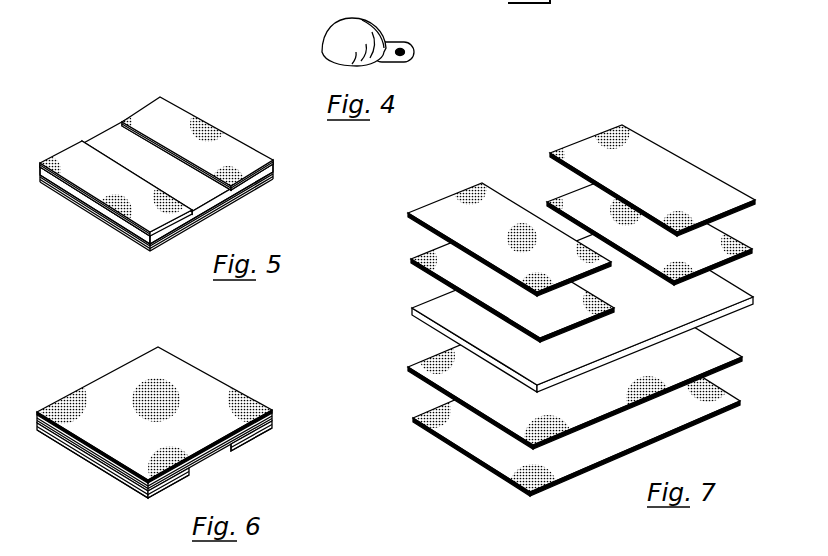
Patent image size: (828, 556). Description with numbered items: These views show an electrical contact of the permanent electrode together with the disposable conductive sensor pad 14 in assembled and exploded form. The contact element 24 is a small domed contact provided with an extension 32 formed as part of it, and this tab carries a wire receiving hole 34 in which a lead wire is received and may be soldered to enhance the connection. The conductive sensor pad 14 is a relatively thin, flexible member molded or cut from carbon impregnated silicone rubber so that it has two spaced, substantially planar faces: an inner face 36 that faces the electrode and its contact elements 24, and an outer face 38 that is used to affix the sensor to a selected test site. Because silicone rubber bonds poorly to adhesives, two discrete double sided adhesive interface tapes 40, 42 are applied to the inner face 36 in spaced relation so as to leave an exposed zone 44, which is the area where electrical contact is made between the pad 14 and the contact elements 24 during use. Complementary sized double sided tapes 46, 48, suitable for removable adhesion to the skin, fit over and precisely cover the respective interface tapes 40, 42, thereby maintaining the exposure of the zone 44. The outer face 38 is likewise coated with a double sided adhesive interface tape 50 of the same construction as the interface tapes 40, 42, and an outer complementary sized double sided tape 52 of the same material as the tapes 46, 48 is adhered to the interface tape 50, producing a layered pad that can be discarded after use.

In FIG. 5, the conductive sensor pad 14 is at (172, 172).
In FIG. 6, the conductive sensor pad 14 is at (185, 436).
In FIG. 4, the contact element 24 is at (333, 40).
In FIG. 4, the extension 32 is at (395, 43).
In FIG. 4, the wire receiving hole 34 is at (410, 60).
In FIG. 5, the inner face 36 is at (117, 135).
In FIG. 6, the inner face 36 is at (205, 463).
In FIG. 7, the inner face 36 is at (730, 283).
In FIG. 5, the outer face 38 is at (257, 188).
In FIG. 6, the outer face 38 is at (222, 450).
In FIG. 7, the outer face 38 is at (735, 310).
In FIG. 5, the double sided adhesive interface tape 40 is at (38, 168).
In FIG. 6, the double sided adhesive interface tape 40 is at (268, 422).
In FIG. 7, the double sided adhesive interface tape 40 is at (428, 252).
In FIG. 5, the double sided adhesive interface tape 42 is at (275, 167).
In FIG. 6, the double sided adhesive interface tape 42 is at (127, 480).
In FIG. 7, the double sided adhesive interface tape 42 is at (715, 233).
In FIG. 5, the exposed zone 44 is at (96, 134).
In FIG. 6, the exposed zone 44 is at (247, 485).
In FIG. 5, the double sided tape 46 is at (77, 153).
In FIG. 6, the double sided tape 46 is at (263, 432).
In FIG. 7, the double sided tape 46 is at (428, 207).
In FIG. 5, the double sided tape 48 is at (240, 153).
In FIG. 6, the double sided tape 48 is at (148, 498).
In FIG. 7, the double sided tape 48 is at (665, 160).
In FIG. 5, the double sided adhesive interface tape 50 is at (127, 232).
In FIG. 6, the double sided adhesive interface tape 50 is at (268, 408).
In FIG. 7, the double sided adhesive interface tape 50 is at (442, 355).
In FIG. 5, the outer double sided tape 52 is at (152, 252).
In FIG. 6, the outer double sided tape 52 is at (185, 372).
In FIG. 7, the outer double sided tape 52 is at (432, 408).